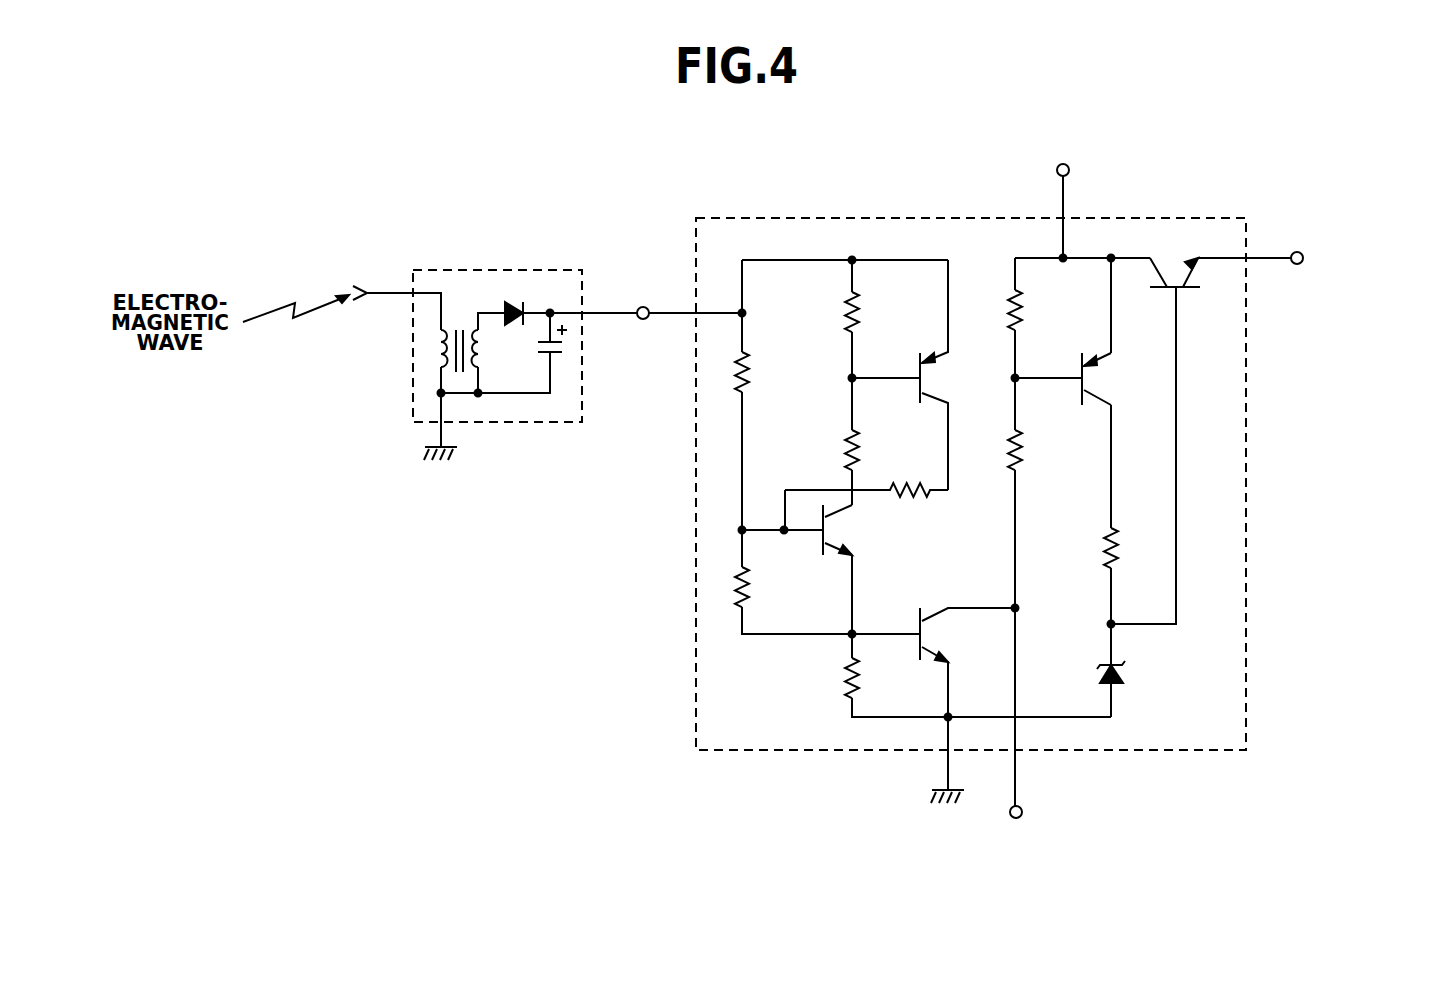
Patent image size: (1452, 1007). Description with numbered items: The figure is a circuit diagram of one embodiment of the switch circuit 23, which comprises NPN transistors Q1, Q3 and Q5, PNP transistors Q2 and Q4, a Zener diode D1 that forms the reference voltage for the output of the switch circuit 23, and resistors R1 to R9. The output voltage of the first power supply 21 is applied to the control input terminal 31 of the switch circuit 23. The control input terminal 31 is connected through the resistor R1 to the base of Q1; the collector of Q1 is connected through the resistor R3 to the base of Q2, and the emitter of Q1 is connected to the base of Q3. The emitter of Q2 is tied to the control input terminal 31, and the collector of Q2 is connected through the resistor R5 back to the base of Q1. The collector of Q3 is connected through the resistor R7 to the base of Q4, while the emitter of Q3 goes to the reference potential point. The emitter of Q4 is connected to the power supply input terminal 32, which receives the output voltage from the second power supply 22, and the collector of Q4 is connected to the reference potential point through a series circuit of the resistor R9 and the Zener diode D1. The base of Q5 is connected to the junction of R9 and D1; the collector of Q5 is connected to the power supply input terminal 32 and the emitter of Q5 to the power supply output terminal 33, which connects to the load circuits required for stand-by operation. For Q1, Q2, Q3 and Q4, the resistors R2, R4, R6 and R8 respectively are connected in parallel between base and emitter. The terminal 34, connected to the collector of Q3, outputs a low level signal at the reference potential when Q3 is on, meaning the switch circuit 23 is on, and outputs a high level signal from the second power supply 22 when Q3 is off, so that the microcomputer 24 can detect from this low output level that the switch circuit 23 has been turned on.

The first power supply 21 is at (465, 267).
The second power supply 22 is at (1060, 138).
The switch circuit 23 is at (1247, 498).
The microcomputer 24 is at (1018, 865).
The control input terminal 31 is at (643, 319).
The power supply input terminal 32 is at (1069, 170).
The power supply output terminal 33 is at (1297, 252).
The terminal 34 is at (1022, 812).
The resistor R1 is at (762, 372).
The resistor R2 is at (762, 587).
The resistor R3 is at (834, 450).
The resistor R4 is at (833, 312).
The resistor R5 is at (866, 504).
The resistor R6 is at (834, 678).
The resistor R7 is at (1036, 450).
The resistor R8 is at (1036, 310).
The resistor R9 is at (1133, 548).
The NPN transistor Q1 is at (813, 530).
The PNP transistor Q2 is at (914, 375).
The NPN transistor Q3 is at (933, 662).
The PNP transistor Q4 is at (1080, 379).
The NPN transistor Q5 is at (1220, 288).
The Zener diode D1 is at (1133, 674).